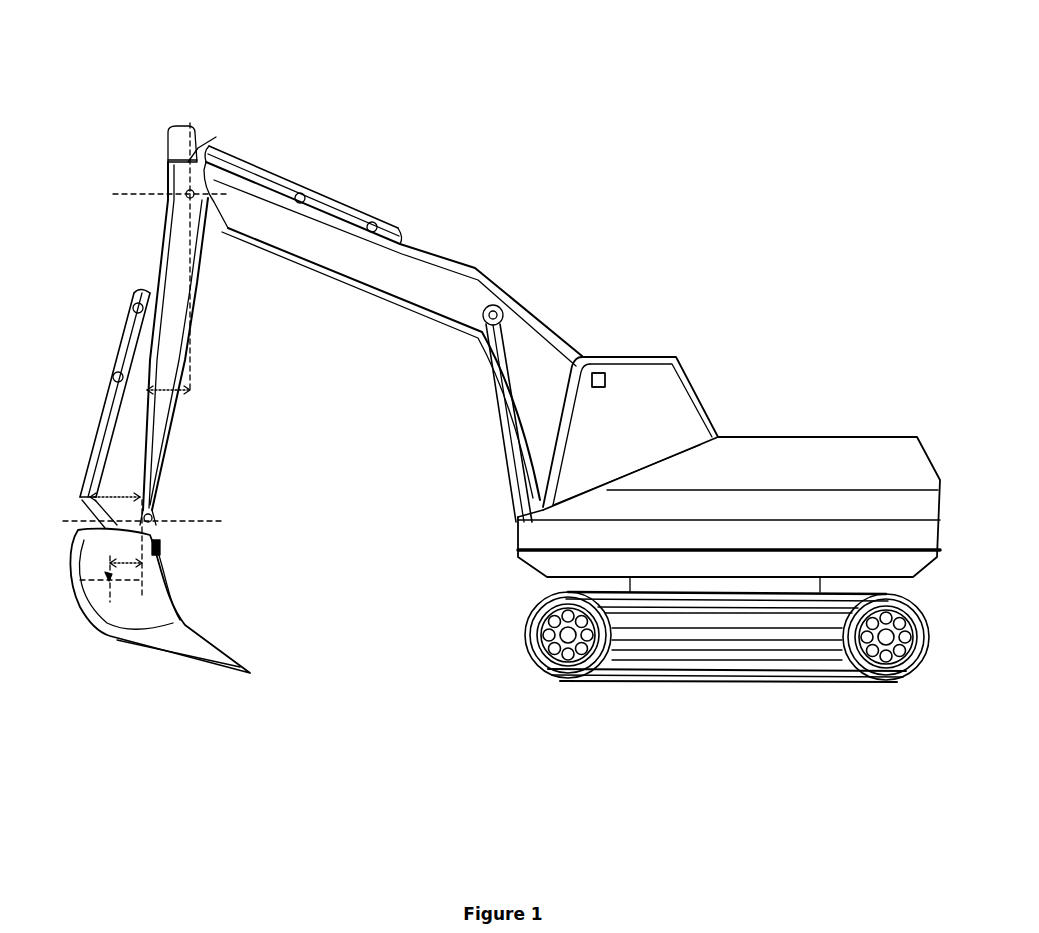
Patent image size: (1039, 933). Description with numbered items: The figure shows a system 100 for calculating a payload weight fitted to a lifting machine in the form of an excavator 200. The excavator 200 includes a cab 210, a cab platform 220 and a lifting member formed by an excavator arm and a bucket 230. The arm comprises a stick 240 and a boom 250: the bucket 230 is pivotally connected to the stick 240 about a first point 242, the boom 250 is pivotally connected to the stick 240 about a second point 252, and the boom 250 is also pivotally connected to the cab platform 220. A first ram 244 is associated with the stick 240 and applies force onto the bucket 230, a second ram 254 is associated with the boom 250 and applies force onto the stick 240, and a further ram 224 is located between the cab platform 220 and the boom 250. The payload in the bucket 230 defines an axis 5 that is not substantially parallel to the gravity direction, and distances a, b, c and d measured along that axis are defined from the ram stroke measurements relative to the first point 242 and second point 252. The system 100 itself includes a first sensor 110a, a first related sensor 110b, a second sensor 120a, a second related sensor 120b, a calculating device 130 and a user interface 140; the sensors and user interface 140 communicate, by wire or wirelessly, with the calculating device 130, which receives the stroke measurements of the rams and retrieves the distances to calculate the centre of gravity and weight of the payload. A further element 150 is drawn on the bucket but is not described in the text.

The system 100 is at (277, 98).
The first sensor 110a is at (135, 305).
The first related sensor 110b is at (114, 375).
The second sensor 120a is at (377, 224).
The second related sensor 120b is at (303, 193).
The calculating device 130 is at (598, 372).
The user interface 140 is at (610, 383).
The bucket sensor 150 is at (163, 548).
The excavator 200 is at (809, 702).
The cab 210 is at (693, 387).
The cab platform 220 is at (517, 556).
The further ram 224 is at (513, 437).
The bucket 230 is at (203, 661).
The stick 240 is at (200, 282).
The first point 242 is at (149, 521).
The first ram 244 is at (120, 335).
The boom 250 is at (471, 266).
The second point 252 is at (188, 193).
The second ram 254 is at (345, 212).
The axis 5 is at (106, 579).